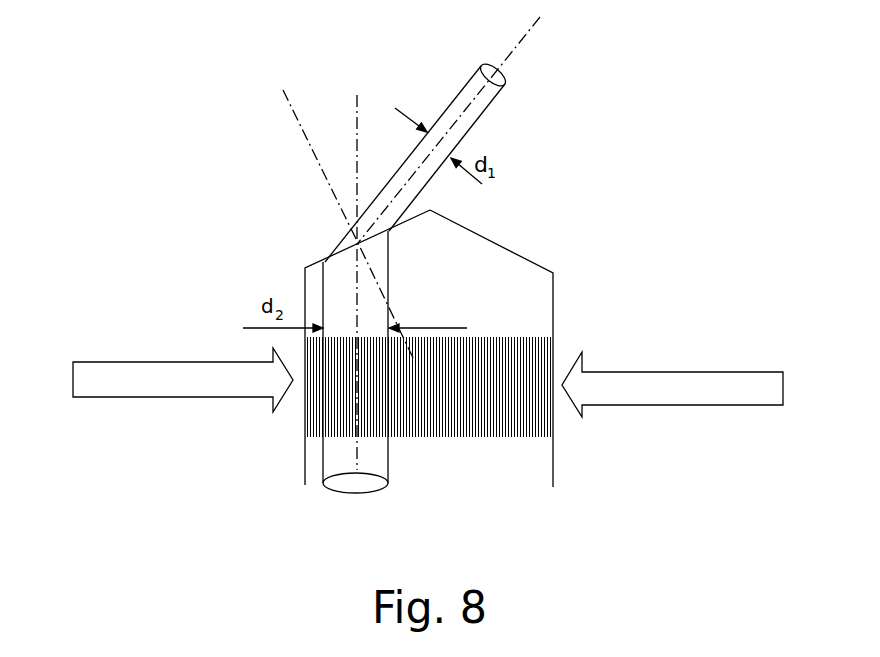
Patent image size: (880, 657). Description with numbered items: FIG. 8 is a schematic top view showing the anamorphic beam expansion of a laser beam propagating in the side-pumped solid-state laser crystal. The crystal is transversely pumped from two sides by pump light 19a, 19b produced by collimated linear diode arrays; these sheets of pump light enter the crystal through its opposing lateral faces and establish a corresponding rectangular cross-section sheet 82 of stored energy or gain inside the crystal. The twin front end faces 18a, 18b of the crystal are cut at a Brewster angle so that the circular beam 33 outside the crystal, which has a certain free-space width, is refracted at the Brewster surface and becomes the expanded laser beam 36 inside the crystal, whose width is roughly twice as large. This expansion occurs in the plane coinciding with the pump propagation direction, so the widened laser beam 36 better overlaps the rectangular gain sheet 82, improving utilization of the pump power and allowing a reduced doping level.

The front end face 18a is at (317, 262).
The front end face 18b is at (507, 245).
The circular beam 33 is at (490, 103).
The laser beam 36 is at (373, 442).
The sheet of stored energy/gain 82 is at (518, 347).
The pump light 19a is at (153, 362).
The pump light 19b is at (730, 372).